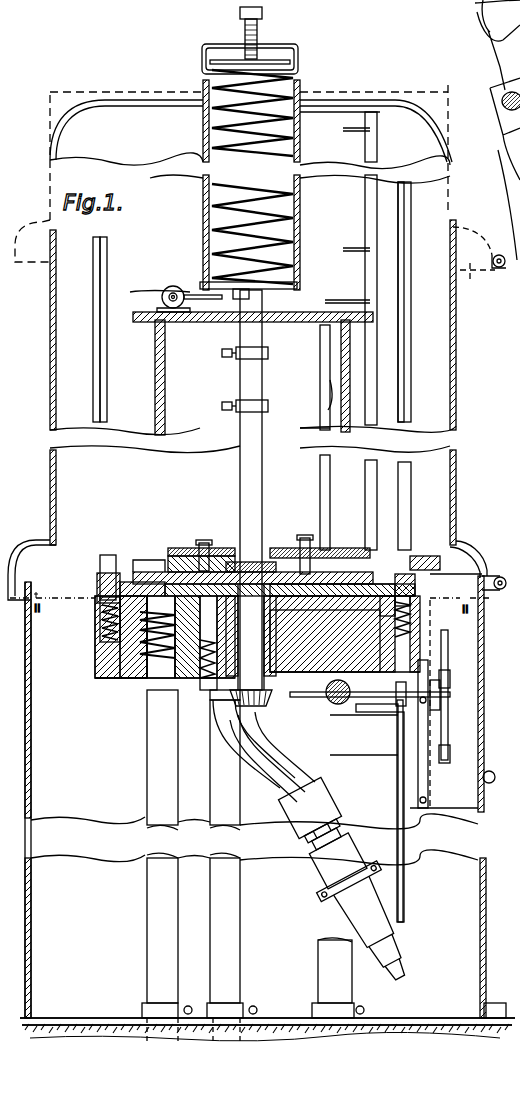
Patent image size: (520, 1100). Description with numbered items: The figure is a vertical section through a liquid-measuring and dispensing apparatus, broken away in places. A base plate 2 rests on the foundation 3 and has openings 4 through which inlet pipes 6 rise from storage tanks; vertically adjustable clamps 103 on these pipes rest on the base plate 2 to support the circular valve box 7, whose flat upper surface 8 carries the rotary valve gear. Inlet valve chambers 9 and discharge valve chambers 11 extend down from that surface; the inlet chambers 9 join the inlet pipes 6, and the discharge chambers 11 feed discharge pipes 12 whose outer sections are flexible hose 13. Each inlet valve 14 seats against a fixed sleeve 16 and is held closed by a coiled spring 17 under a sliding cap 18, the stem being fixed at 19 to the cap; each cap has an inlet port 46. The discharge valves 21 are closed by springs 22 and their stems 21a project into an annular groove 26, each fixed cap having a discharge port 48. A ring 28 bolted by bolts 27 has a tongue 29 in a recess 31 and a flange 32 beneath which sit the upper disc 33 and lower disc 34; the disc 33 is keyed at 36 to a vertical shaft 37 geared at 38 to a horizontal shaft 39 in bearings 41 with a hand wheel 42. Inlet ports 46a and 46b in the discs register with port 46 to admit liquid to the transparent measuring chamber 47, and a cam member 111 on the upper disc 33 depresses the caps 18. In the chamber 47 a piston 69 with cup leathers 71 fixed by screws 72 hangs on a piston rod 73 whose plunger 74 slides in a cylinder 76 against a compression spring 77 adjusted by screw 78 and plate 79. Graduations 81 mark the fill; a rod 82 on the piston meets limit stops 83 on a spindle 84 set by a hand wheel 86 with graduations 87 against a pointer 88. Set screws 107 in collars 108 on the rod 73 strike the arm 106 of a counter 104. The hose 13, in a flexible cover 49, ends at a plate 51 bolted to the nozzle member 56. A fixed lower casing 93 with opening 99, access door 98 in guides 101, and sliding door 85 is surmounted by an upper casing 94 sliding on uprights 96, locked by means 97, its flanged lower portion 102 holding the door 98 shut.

The base plate 2 is at (95, 1017).
The foundation 3 is at (430, 1035).
The openings 4 is at (315, 1035).
The inlet pipes 6 is at (205, 795).
The valve box 7 is at (128, 678).
The upper surface 8 is at (283, 548).
The inlet valve chambers 9 is at (150, 662).
The discharge valve chambers 11 is at (178, 678).
The discharge pipes 12 is at (212, 720).
The flexible tubes or hose 13 is at (245, 765).
The inlet valves 14 is at (130, 680).
The sleeves 16 is at (103, 636).
The coiled springs 17 is at (104, 618).
The caps 18 is at (112, 598).
The fixing of inlet valve stem 19 is at (150, 585).
The discharge valves 21 is at (217, 690).
The discharge valve stems 21a is at (505, 286).
The springs 22 is at (210, 548).
The annular groove 26 is at (310, 540).
The bolts 27 is at (410, 616).
The ring 28 is at (415, 580).
The annular depending tongue 29 is at (392, 600).
The annular recess 31 is at (410, 625).
The annular flange 32 is at (405, 600).
The upper disc 33 is at (395, 584).
The lower disc 34 is at (338, 704).
The key or feather 36 is at (250, 562).
The vertical shaft 37 is at (251, 636).
The gears 38 is at (258, 708).
The horizontal shaft 39 is at (440, 695).
The bearings 41 is at (400, 708).
The operating hand wheel 42 is at (448, 720).
The inlet port 46 is at (120, 726).
The inlet port of upper disc 46a is at (178, 556).
The inlet port of lower disc 46b is at (190, 556).
The measuring chamber 47 is at (222, 407).
The discharge port 48 is at (200, 678).
The flexible cover 49 is at (313, 815).
The plate 51 is at (320, 893).
The nozzle member 56 is at (376, 931).
The piston 69 is at (345, 570).
The cup leathers or washers 71 is at (302, 548).
The screws 72 is at (330, 548).
The piston rod 73 is at (263, 470).
The head or plunger 74 is at (283, 289).
The vertical cylinder 76 is at (205, 212).
The compression spring 77 is at (205, 134).
The adjusting screw 78 is at (243, 31).
The adjustable plate 79 is at (207, 62).
The measurement markings or graduations 81 is at (322, 400).
The rod 82 is at (320, 333).
The limit stops or arms 83 is at (352, 131).
The vertical spindle 84 is at (365, 205).
The sliding door 85 is at (385, 800).
The hand wheel 86 is at (392, 730).
The graduations 87 is at (380, 712).
The pointer 88 is at (372, 712).
The lower casing 93 is at (31, 802).
The upper casing 94 is at (456, 378).
The uprights 96 is at (93, 393).
The locking means 97 is at (496, 592).
The access door 98 is at (484, 766).
The opening 99 is at (486, 790).
The guides 101 is at (430, 790).
The flanged lower portion 102 is at (500, 575).
The clamps or flange members 103 is at (312, 1010).
The counter device 104 is at (163, 291).
The operating arm 106 is at (195, 292).
The set screws 107 is at (222, 355).
The collars 108 is at (320, 374).
The cam member 111 is at (158, 560).